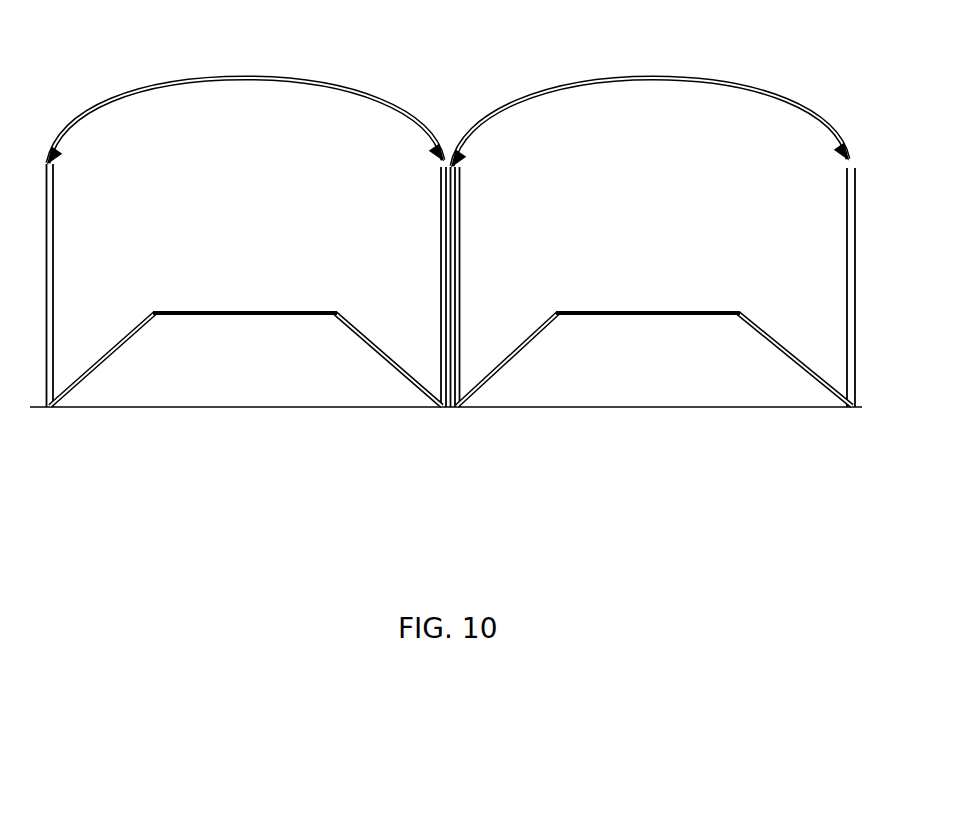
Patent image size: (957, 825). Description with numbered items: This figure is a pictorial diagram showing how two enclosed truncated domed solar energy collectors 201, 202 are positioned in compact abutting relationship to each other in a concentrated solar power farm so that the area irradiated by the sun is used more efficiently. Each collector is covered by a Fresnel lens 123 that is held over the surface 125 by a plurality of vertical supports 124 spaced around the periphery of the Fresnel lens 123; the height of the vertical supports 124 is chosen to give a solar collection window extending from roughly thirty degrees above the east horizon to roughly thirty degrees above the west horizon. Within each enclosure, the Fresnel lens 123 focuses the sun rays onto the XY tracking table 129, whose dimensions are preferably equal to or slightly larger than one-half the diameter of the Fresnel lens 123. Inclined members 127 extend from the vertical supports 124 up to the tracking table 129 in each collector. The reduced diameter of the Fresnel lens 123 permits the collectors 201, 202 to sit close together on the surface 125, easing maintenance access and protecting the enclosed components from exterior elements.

The Fresnel lens 123 is at (213, 80).
The vertical supports 124 is at (55, 220).
The surface 125 is at (317, 405).
The inclined member 127 is at (98, 353).
The XY tracking table 129 is at (253, 312).
The enclosed solar energy collector 201 is at (168, 430).
The enclosed solar energy collector 202 is at (575, 422).